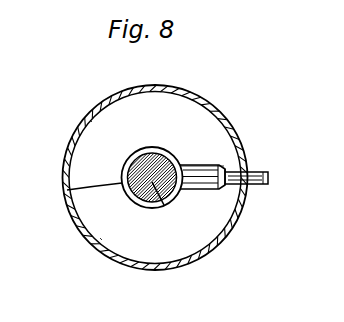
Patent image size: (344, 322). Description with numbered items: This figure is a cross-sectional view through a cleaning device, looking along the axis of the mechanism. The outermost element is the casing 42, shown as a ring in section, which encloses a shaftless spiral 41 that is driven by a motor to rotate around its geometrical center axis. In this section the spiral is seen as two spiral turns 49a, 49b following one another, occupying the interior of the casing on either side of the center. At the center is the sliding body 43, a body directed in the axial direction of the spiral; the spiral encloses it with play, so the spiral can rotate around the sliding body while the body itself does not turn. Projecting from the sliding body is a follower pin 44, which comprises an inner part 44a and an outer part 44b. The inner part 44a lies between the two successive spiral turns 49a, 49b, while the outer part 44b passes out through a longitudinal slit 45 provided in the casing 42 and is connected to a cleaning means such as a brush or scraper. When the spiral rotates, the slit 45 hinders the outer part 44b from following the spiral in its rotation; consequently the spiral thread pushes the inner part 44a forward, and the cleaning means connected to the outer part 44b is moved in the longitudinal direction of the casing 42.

The shaftless spiral 41 is at (203, 218).
The casing 42 is at (204, 100).
The sliding body 43 is at (163, 208).
The follower pin 44 is at (209, 158).
The inner part of the follower pin 44a is at (241, 201).
The outer part of the follower pin 44b is at (266, 179).
The longitudinal slit 45 is at (256, 168).
The spiral turn 49a is at (102, 132).
The spiral turn 49b is at (112, 228).